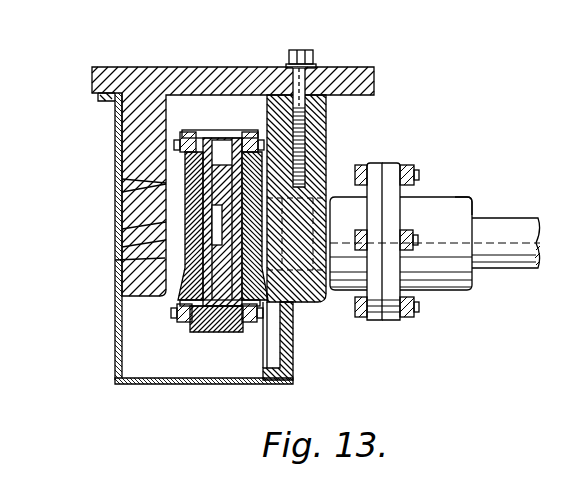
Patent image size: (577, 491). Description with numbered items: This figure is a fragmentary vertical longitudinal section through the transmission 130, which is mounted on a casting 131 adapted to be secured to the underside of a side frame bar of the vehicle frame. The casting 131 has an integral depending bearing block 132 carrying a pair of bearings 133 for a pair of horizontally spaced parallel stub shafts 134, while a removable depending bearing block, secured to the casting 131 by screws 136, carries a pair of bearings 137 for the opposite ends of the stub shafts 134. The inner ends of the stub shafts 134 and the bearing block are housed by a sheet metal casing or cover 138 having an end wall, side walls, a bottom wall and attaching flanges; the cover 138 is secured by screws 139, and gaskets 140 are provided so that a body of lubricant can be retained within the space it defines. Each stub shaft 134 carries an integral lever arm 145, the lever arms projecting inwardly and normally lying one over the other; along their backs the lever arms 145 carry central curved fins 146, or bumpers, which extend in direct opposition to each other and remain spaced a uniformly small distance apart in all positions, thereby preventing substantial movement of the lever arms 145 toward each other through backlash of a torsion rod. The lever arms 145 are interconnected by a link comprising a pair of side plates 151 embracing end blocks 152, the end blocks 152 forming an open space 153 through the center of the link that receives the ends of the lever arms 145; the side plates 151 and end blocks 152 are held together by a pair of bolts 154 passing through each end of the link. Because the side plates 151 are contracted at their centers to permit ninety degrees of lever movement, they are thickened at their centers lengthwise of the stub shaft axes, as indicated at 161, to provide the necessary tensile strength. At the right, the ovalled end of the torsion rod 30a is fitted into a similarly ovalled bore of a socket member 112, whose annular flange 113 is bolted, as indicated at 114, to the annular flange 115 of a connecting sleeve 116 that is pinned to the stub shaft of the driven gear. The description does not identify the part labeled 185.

The casting 131 is at (204, 68).
The side plates 151 is at (250, 133).
The screws 136 is at (312, 54).
The end blocks 152 is at (212, 160).
The lever arm 145 is at (264, 172).
The annular flange 115 is at (377, 163).
The annular flange 113 is at (396, 163).
The bolts 114 is at (420, 177).
The socket member 112 is at (460, 198).
The torsion rod 30a is at (515, 219).
The connecting sleeve 116 is at (342, 212).
The gaskets 140 is at (100, 94).
The screws 139 is at (98, 98).
The bolts 154 is at (188, 140).
The transmission 130 is at (96, 157).
The open space 153 is at (122, 179).
The sheet metal casing or cover 138 is at (122, 192).
The central curved fins 146 is at (190, 216).
The integral depending bearing block 132 is at (122, 229).
The stub shafts 134 is at (122, 247).
The thickened centers of side plates 161 is at (115, 260).
The bearings 133 is at (115, 284).
The support block 185 is at (325, 300).
The bearings 137 is at (296, 345).